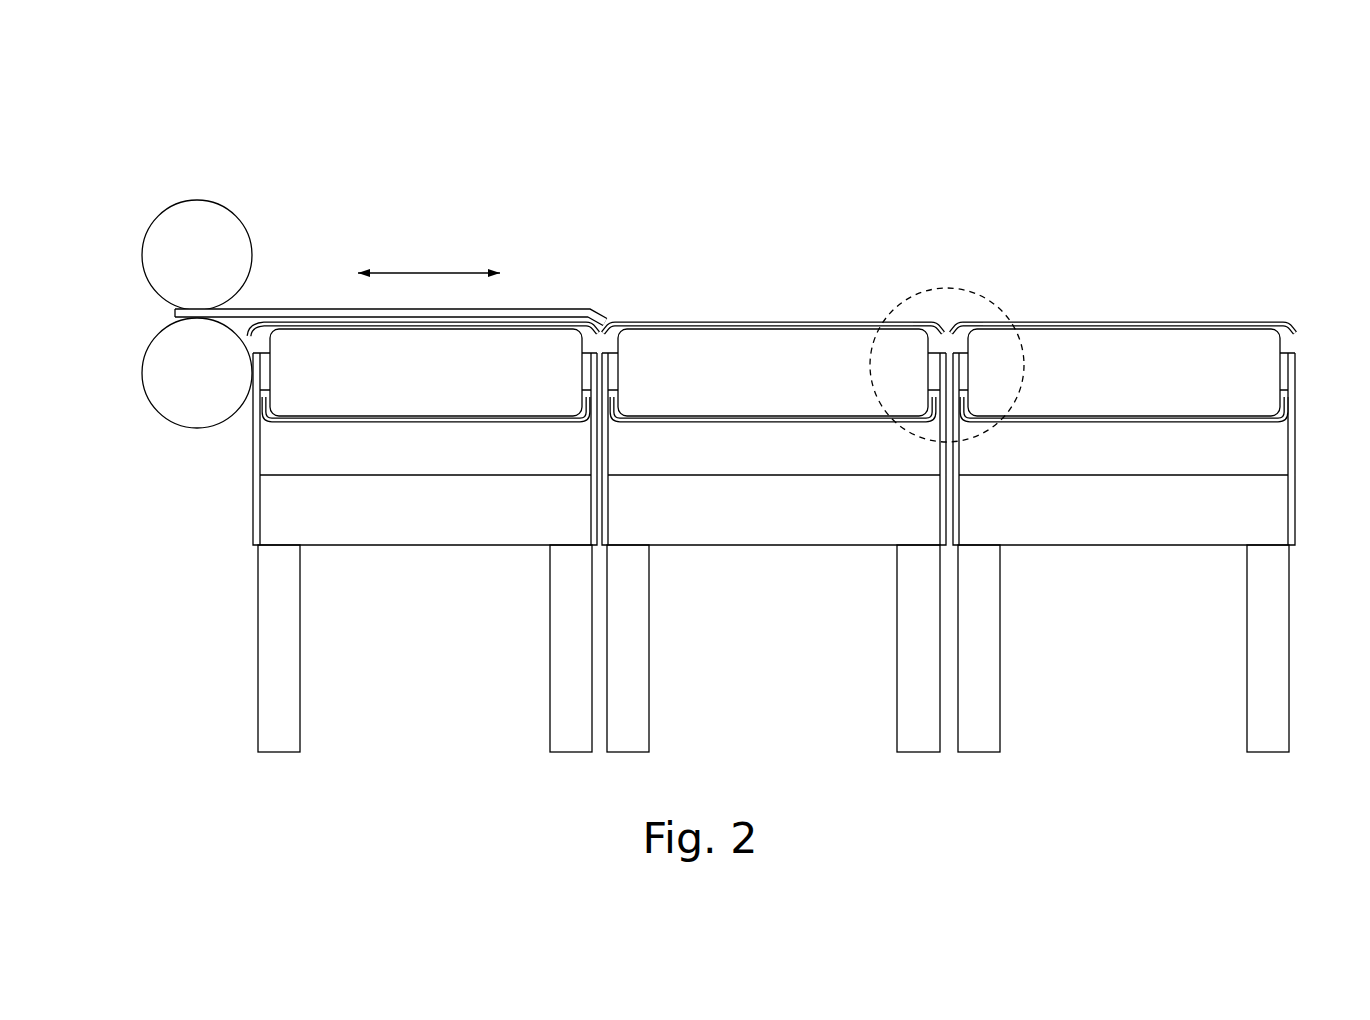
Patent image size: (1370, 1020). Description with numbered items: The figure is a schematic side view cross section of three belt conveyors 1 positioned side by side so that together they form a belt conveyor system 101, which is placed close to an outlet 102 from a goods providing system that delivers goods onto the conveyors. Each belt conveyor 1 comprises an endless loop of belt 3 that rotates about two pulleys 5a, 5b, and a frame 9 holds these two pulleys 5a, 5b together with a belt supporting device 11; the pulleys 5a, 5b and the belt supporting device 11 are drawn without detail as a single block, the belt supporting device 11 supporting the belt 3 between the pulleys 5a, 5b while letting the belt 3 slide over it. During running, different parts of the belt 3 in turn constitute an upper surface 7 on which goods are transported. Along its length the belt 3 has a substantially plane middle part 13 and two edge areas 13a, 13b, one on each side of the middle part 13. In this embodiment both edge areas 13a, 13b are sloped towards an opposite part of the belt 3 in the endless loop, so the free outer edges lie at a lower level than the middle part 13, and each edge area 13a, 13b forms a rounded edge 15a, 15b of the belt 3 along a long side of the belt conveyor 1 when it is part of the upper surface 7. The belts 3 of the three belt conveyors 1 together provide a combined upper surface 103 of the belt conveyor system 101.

The belt conveyor 1 is at (422, 175).
The belt 3 is at (802, 329).
The pulley 5a is at (702, 334).
The pulley 5b is at (290, 390).
The upper surface 7 is at (695, 325).
The frame 9 is at (258, 662).
The belt supporting device 11 is at (702, 334).
The middle part 13 is at (775, 272).
The edge area 13a is at (637, 260).
The edge area 13b is at (961, 258).
The rounded edge 15a is at (953, 326).
The rounded edge 15b is at (942, 326).
The belt conveyor system 101 is at (1193, 132).
The outlet 102 is at (245, 305).
The combined upper surface 103 is at (862, 197).